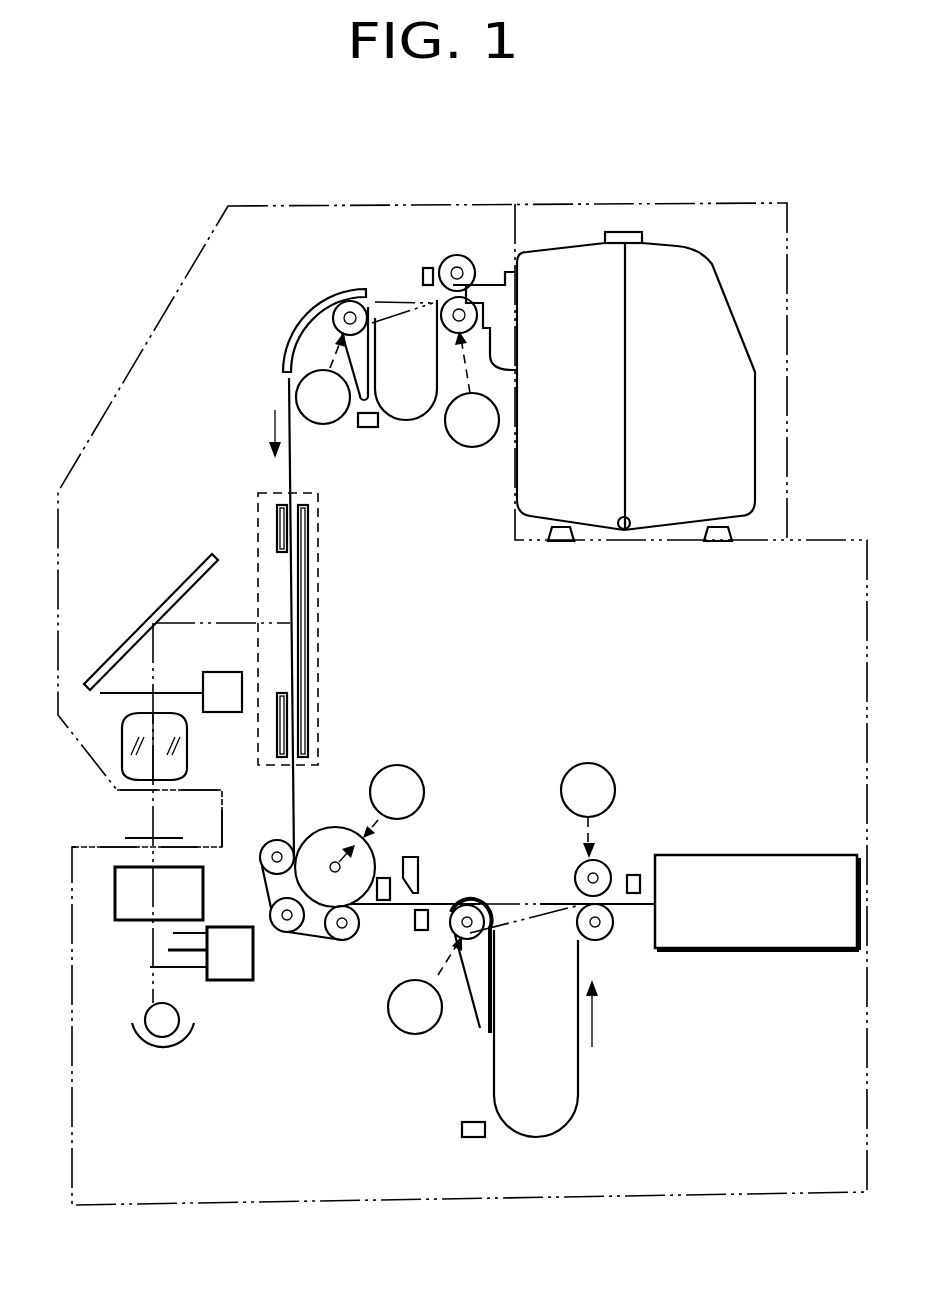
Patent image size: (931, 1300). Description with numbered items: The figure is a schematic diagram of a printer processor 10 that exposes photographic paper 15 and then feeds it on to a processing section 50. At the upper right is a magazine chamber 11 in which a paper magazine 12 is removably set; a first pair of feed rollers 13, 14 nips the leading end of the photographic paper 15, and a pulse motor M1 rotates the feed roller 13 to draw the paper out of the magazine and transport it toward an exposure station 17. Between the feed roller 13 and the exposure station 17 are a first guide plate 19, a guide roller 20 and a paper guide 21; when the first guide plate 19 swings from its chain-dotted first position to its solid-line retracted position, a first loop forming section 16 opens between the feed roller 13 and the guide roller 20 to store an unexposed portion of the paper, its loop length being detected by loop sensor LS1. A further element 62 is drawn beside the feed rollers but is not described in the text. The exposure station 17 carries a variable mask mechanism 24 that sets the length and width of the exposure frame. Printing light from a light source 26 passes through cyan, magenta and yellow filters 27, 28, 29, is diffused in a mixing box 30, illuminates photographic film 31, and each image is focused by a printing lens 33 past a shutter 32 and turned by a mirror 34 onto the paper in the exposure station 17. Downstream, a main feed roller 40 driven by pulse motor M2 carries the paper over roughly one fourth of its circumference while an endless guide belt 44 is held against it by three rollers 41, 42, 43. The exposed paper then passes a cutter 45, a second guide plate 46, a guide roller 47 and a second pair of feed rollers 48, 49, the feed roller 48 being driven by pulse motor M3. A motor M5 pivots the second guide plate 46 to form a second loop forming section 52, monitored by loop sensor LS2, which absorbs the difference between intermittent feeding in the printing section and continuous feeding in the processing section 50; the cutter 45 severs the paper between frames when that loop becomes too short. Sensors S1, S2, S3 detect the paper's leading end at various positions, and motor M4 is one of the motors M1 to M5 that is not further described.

The printer processor 10 is at (330, 1200).
The magazine chamber 11 is at (587, 228).
The paper magazine 12 is at (766, 415).
The feed roller 13 is at (476, 322).
The feed roller 14 is at (457, 262).
The photographic paper 15 is at (288, 480).
The first loop forming section 16 is at (414, 430).
The exposure station 17 is at (326, 686).
The first guide plate 19 is at (369, 364).
The guide roller 20 is at (369, 303).
The paper guide 21 is at (313, 300).
The variable mask mechanism 24 is at (277, 537).
The light source 26 is at (163, 1047).
The cyan filter 27 is at (190, 967).
The magenta filter 28 is at (168, 950).
The yellow filter 29 is at (173, 933).
The mixing box 30 is at (115, 903).
The photographic film 31 is at (130, 835).
The shutter 32 is at (188, 695).
The printing lens 33 is at (122, 757).
The mirror 34 is at (165, 598).
The main feed roller 40 is at (335, 828).
The roller 41 is at (275, 840).
The roller 42 is at (287, 933).
The roller 43 is at (356, 926).
The endless guide belt 44 is at (318, 940).
The cutter 45 is at (420, 868).
The second guide plate 46 is at (478, 1030).
The guide roller 47 is at (468, 905).
The feed roller 48 is at (582, 862).
The feed roller 49 is at (605, 940).
The processing section 50 is at (770, 949).
The second loop forming section 52 is at (584, 1116).
The guide plate 62 is at (492, 297).
The pulse motor M1 is at (472, 420).
The pulse motor M2 is at (393, 801).
The pulse motor M3 is at (588, 810).
The motor M4 is at (323, 378).
The motor M5 is at (425, 985).
The sensor S1 is at (428, 268).
The sensor S2 is at (385, 878).
The sensor S3 is at (633, 875).
The loop sensor LS1 is at (368, 427).
The loop sensor LS2 is at (460, 1130).